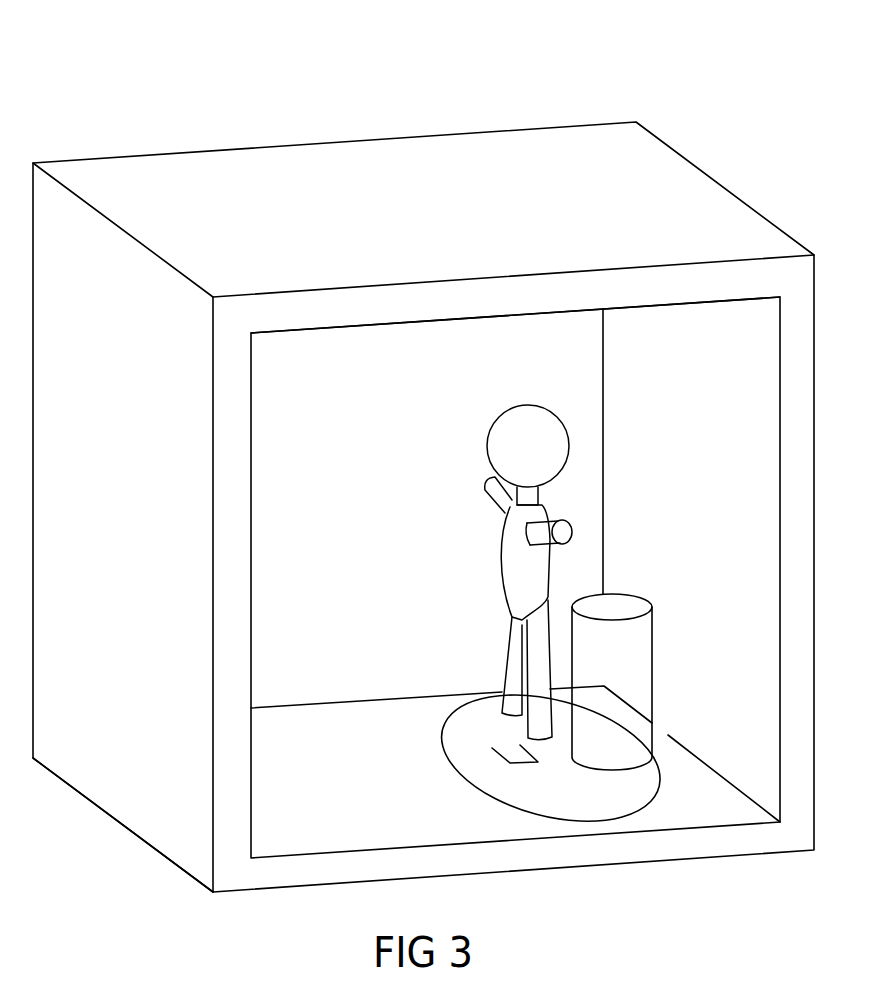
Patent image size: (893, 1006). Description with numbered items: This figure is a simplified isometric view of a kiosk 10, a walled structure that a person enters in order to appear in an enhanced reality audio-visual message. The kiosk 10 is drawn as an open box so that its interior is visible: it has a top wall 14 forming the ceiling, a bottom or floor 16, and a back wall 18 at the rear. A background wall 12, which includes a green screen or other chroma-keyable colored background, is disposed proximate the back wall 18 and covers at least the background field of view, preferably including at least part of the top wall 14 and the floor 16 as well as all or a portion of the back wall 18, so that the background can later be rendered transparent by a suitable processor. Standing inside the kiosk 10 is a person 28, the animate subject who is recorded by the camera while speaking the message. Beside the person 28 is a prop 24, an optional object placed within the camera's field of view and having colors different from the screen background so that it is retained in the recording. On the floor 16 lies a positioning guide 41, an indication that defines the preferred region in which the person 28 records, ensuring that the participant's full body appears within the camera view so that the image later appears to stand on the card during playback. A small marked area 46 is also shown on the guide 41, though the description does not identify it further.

The kiosk 10 is at (504, 101).
The background wall 12 is at (651, 432).
The top wall 14 is at (420, 322).
The floor 16 is at (342, 718).
The back wall 18 is at (653, 451).
The prop 24 is at (612, 682).
The person 28 is at (500, 548).
The positioning guide 41 is at (627, 810).
The sensor box 46 is at (528, 763).